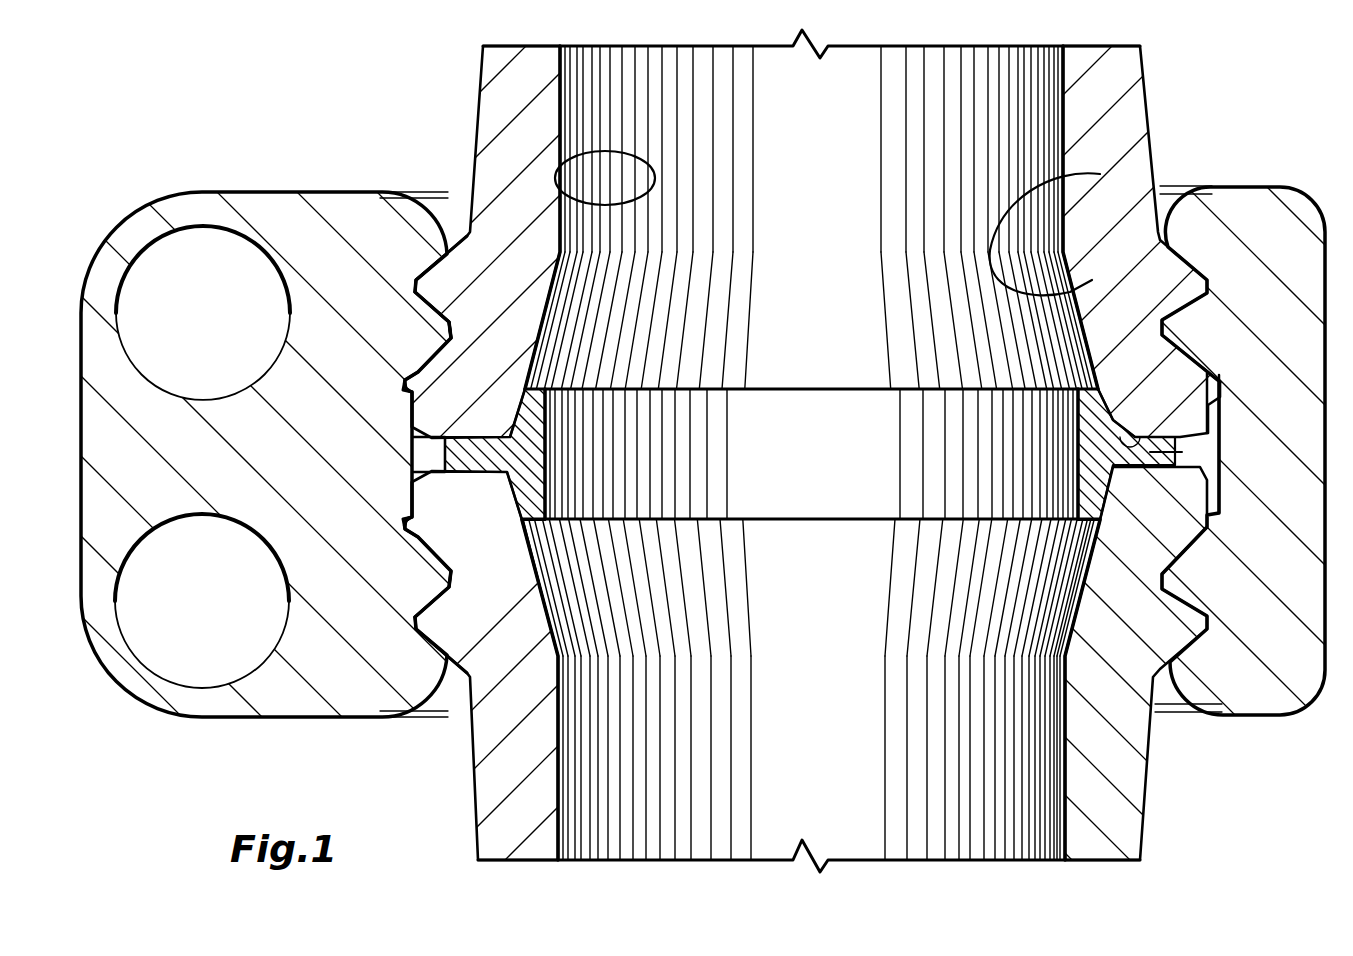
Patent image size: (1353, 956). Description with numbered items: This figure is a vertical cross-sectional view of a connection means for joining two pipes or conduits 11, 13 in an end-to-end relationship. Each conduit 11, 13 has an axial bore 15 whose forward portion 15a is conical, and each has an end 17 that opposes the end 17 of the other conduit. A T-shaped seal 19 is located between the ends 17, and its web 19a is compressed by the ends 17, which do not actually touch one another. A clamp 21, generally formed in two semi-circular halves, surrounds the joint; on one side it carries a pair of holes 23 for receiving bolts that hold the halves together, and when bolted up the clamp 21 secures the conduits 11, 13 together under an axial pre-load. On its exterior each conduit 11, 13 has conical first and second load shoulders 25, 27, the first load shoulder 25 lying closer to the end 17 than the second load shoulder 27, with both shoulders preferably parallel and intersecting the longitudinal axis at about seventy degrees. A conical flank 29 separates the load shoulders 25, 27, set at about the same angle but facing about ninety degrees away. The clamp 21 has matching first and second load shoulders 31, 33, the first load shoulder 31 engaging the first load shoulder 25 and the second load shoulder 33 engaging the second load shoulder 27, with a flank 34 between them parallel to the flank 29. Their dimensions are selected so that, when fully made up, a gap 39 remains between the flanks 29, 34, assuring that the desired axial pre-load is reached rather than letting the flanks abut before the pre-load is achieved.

The conduit 11 is at (523, 77).
The conduit 13 is at (1110, 825).
The axial bore 15 is at (555, 152).
The forward portion of bore 15a is at (1100, 174).
The end 17 is at (1122, 433).
The T-shaped seal 19 is at (1100, 453).
The web 19a is at (1163, 452).
The clamp 21 is at (325, 210).
The holes 23 is at (285, 292).
The first load shoulder 25 is at (420, 365).
The second load shoulder 27 is at (423, 263).
The flank 29 is at (440, 316).
The first load shoulder of clamp 31 is at (420, 537).
The second load shoulder of clamp 33 is at (425, 642).
The flank 34 is at (445, 320).
The gap 39 is at (417, 597).